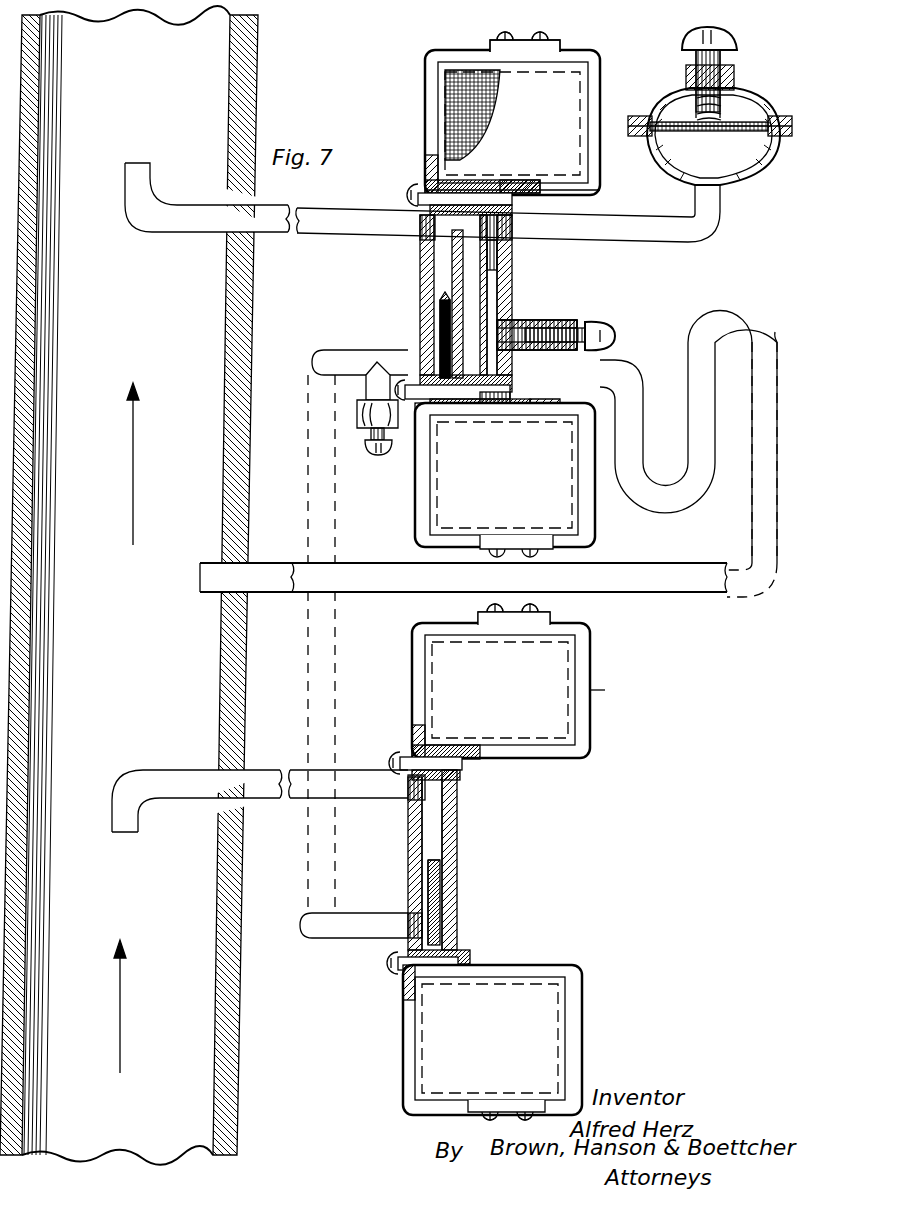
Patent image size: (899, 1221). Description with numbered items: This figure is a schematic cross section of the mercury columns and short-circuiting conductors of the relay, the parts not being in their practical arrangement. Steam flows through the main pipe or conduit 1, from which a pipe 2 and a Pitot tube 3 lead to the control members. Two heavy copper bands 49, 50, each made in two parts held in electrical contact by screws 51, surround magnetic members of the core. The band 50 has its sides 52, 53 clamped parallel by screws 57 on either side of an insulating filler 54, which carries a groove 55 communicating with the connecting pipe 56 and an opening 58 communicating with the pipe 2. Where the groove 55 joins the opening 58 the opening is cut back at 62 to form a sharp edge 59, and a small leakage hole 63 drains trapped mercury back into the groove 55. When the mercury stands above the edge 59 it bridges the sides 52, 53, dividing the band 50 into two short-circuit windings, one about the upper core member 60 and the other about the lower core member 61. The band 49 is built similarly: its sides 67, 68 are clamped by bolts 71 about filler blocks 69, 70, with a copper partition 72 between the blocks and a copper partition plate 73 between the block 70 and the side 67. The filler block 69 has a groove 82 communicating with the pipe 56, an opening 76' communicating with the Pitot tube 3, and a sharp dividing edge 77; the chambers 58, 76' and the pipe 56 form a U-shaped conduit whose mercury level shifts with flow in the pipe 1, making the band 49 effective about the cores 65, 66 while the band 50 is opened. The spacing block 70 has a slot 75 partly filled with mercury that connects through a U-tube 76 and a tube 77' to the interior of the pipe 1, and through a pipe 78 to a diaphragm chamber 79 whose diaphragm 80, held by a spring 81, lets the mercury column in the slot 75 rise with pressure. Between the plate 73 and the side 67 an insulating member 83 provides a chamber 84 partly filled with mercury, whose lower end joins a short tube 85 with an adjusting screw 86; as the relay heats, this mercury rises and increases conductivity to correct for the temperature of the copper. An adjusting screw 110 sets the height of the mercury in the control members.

The main pipe or conduit 1 is at (180, 690).
The pipe 2 is at (143, 790).
The Pitot tube 3 is at (188, 218).
The heavy copper band 49 is at (430, 70).
The heavy copper band 50 is at (580, 692).
The screws 51 is at (540, 38).
The side of copper band 52 is at (457, 810).
The side of copper band 53 is at (420, 815).
The insulating filler 54 is at (410, 990).
The groove 55 is at (428, 895).
The connecting pipe 56 is at (318, 355).
The screws 57 is at (405, 760).
The opening 58 is at (433, 825).
The sharp edge 59 is at (440, 865).
The upper member of the core 60 is at (545, 680).
The lower member of the magnetic core 61 is at (525, 1025).
The cut-back portion of the opening 62 is at (450, 860).
The small leakage hole 63 is at (455, 880).
The core 65 is at (540, 95).
The core 66 is at (450, 455).
The side of copper band 67 is at (500, 295).
The side of copper band 68 is at (422, 275).
The filler block 69 is at (425, 175).
The filler block 70 is at (470, 183).
The bolts 71 is at (418, 205).
The copper partition 72 is at (455, 290).
The copper partition plate 73 is at (497, 262).
The slot 75 is at (505, 235).
The U-tube 76 is at (688, 454).
The opening 76' is at (412, 239).
The sharp dividing edge 77 is at (422, 335).
The tube 77' is at (463, 588).
The pipe 78 is at (688, 232).
The diaphragm chamber 79 is at (730, 150).
The diaphragm 80 is at (755, 120).
The spring 81 is at (730, 65).
The groove 82 is at (447, 325).
The insulating member 83 is at (500, 183).
The chamber 84 is at (495, 300).
The short tube 85 is at (565, 330).
The adjusting screw 86 is at (610, 335).
The adjusting screw 110 is at (365, 450).